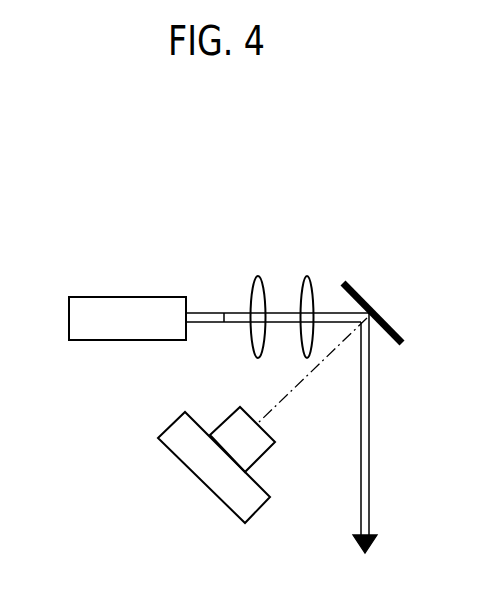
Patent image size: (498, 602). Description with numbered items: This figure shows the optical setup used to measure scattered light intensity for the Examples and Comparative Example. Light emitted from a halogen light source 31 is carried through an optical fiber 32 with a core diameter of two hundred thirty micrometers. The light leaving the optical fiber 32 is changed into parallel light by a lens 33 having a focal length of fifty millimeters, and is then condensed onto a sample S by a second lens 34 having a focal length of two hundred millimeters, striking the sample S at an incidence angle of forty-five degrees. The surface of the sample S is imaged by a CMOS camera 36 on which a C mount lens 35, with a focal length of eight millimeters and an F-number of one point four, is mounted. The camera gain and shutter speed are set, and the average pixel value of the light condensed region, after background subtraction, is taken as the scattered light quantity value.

The halogen light source 31 is at (91, 341).
The optical fiber 32 is at (205, 323).
The lens 33 is at (258, 274).
The lens 34 is at (307, 274).
The sample S is at (366, 300).
The C mount lens 35 is at (257, 452).
The CMOS camera 36 is at (218, 502).